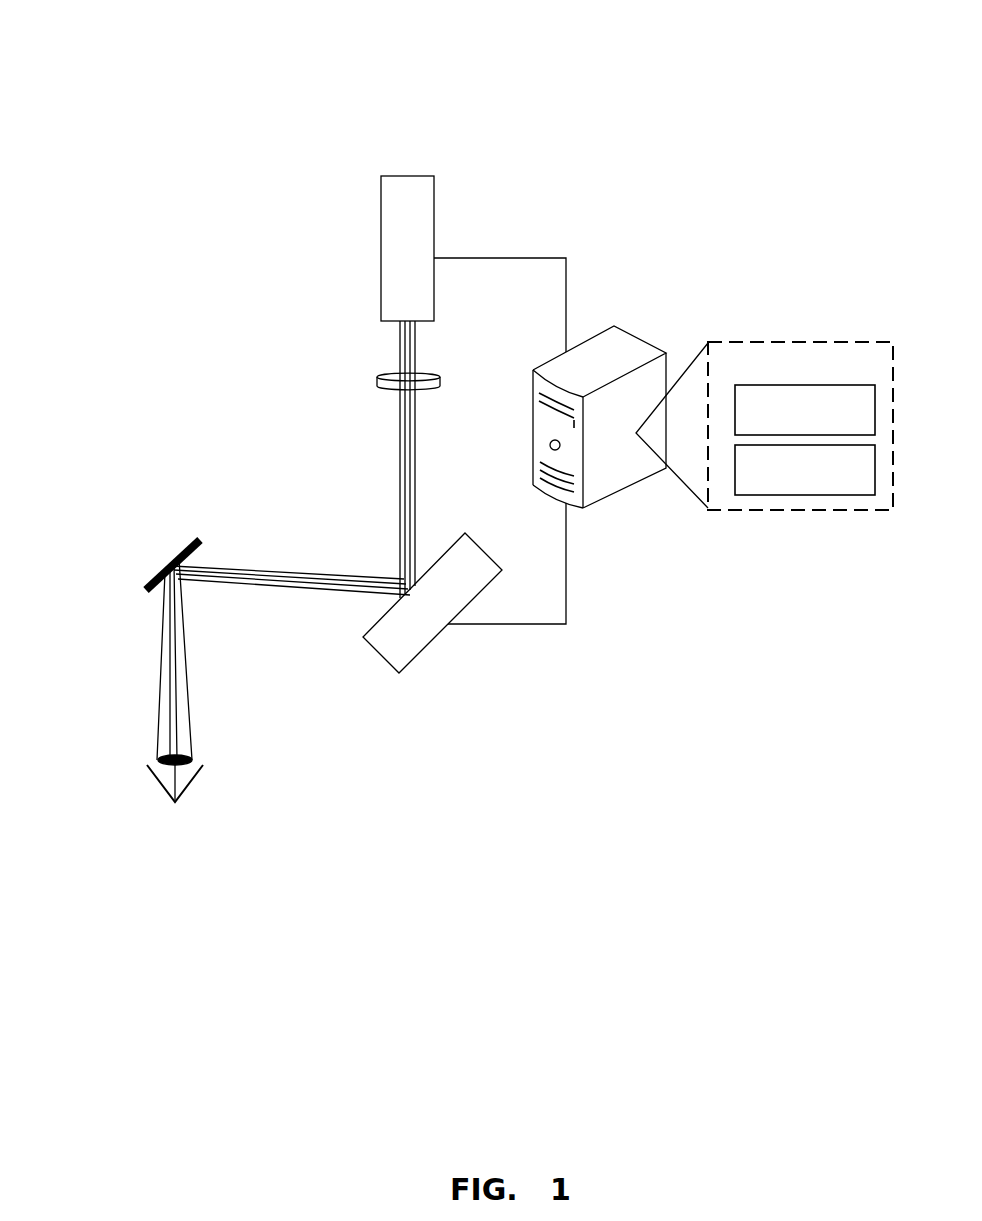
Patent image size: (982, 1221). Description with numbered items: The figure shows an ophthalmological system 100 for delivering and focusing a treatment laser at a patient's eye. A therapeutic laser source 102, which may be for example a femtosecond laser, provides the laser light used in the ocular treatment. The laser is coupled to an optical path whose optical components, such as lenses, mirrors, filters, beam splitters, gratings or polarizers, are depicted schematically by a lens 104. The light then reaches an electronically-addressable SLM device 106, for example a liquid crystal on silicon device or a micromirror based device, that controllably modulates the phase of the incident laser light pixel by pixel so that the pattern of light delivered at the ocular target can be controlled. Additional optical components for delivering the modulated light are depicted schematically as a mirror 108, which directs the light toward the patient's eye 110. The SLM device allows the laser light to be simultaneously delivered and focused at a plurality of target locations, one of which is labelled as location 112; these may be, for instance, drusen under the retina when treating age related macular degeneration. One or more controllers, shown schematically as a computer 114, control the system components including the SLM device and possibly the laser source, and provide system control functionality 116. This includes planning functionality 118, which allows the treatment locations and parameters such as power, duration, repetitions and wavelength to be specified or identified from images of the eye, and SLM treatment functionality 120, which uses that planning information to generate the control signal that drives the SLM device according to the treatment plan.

The system 100 is at (505, 37).
The therapeutic laser source 102 is at (410, 176).
The lens 104 is at (377, 379).
The SLM device 106 is at (400, 674).
The mirror 108 is at (187, 536).
The patient's eye 110 is at (148, 771).
The target location 112 is at (201, 768).
The computer 114 is at (603, 327).
The system control functionality 116 is at (798, 341).
The planning functionality 118 is at (876, 410).
The SLM treatment functionality 120 is at (876, 468).